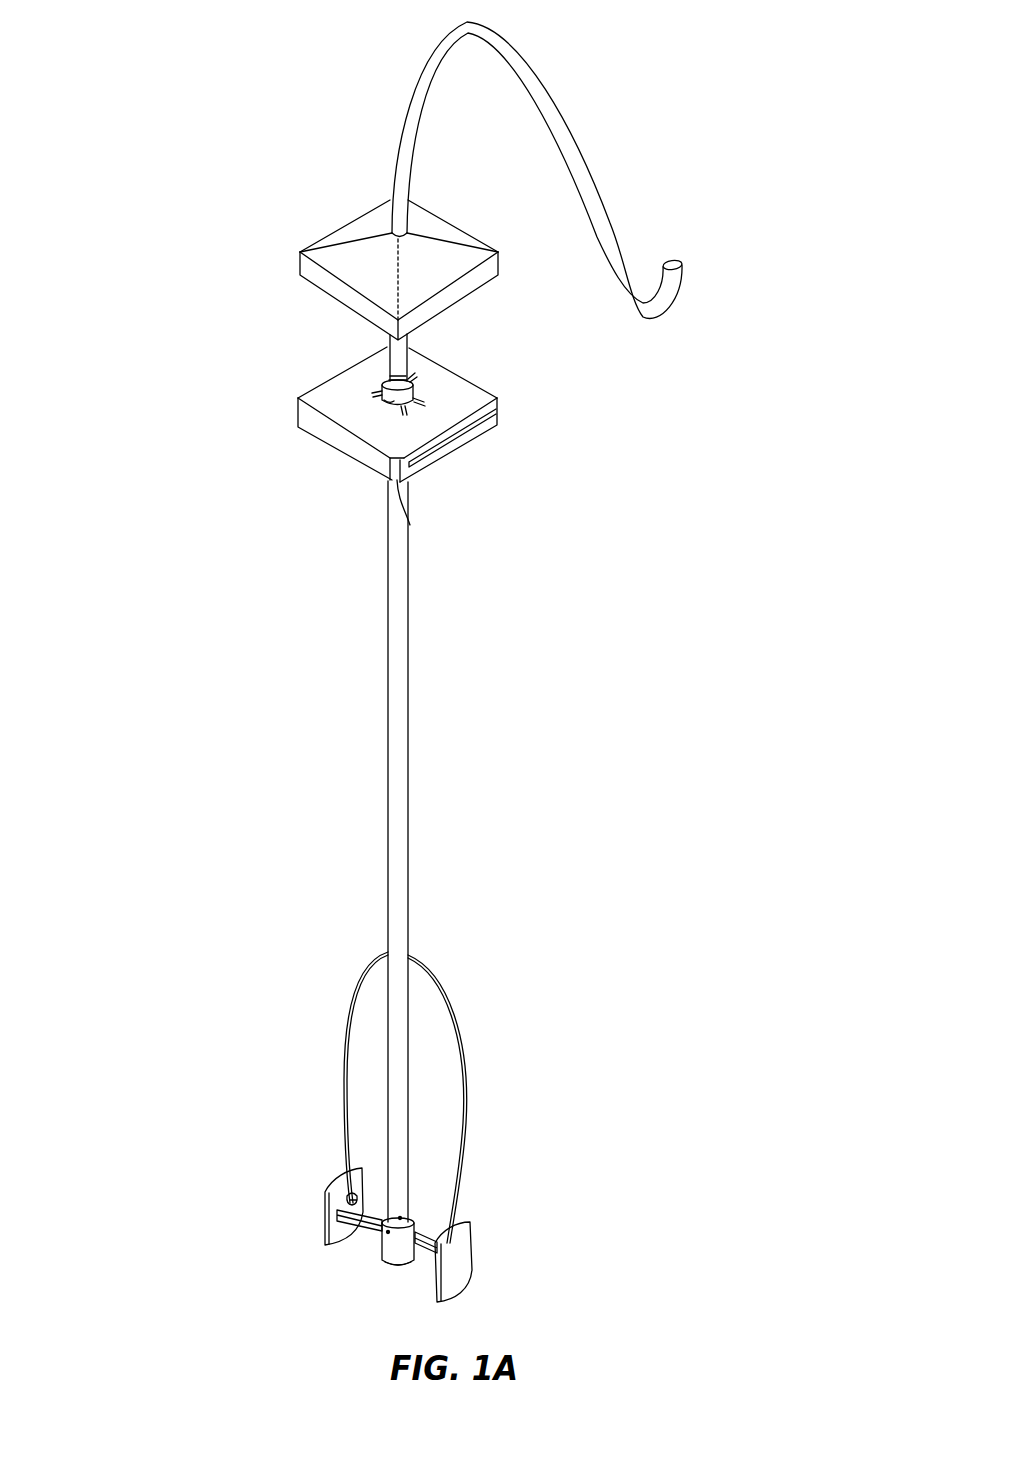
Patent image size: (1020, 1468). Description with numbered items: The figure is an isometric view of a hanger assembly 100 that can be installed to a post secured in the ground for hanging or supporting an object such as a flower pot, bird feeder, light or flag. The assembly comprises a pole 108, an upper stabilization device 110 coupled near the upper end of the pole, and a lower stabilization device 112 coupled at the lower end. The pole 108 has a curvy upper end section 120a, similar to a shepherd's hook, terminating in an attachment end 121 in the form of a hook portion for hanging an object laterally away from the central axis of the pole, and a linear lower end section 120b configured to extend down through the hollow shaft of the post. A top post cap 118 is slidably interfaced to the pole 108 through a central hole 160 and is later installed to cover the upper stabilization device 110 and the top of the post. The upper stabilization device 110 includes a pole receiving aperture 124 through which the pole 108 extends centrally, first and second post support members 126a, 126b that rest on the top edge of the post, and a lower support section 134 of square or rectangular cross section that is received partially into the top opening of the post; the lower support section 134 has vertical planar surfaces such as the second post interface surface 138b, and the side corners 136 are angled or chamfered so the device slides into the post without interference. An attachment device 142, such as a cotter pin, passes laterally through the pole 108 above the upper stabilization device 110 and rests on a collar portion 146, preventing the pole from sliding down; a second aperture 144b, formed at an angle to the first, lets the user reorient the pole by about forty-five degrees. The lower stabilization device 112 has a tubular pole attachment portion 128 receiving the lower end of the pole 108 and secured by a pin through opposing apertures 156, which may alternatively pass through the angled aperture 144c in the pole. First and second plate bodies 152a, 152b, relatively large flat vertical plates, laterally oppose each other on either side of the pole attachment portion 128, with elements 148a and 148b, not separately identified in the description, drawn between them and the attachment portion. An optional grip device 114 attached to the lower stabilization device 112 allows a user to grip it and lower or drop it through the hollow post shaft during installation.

The hanger assembly 100 is at (218, 108).
The pole 108 is at (427, 77).
The upper stabilization device 110 is at (268, 380).
The lower stabilization device 112 is at (258, 1195).
The grip device 114 is at (457, 1022).
The top post cap 118 is at (322, 240).
The upper end section 120a is at (385, 128).
The lower end section 120b is at (360, 549).
The attachment end 121 is at (663, 292).
The pole receiving aperture 124 is at (442, 459).
The first post support member 126a is at (313, 386).
The second post support member 126b is at (497, 410).
The pole attachment portion 128 is at (415, 1228).
The lower support section 134 is at (378, 462).
The side corners 136 is at (300, 417).
The second post interface surface 138b is at (425, 432).
The attachment device 142 is at (383, 400).
The second aperture 144b is at (400, 380).
The aperture 144c is at (400, 1218).
The collar portion 146 is at (380, 398).
The first arm 148a is at (320, 1200).
The second arm 148b is at (465, 1246).
The first plate body 152a is at (340, 1240).
The second plate body 152b is at (462, 1273).
The apertures 156 is at (397, 1260).
The central hole 160 is at (408, 237).